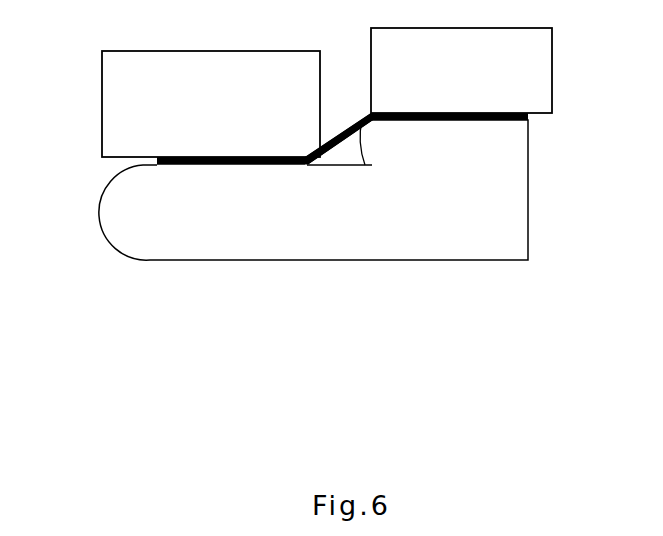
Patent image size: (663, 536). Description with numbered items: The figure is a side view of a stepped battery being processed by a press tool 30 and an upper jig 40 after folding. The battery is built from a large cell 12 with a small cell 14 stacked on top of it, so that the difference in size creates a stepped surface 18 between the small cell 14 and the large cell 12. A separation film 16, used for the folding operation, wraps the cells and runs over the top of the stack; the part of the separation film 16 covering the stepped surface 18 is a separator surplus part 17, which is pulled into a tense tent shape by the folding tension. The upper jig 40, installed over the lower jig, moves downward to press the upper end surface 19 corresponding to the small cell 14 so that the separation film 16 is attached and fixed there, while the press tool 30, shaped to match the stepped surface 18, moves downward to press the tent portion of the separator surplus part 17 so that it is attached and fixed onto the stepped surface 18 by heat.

The large cell 12 is at (522, 220).
The small cell 14 is at (522, 142).
The separation film 16 is at (530, 120).
The separator surplus part 17 is at (333, 148).
The stepped surface 18 is at (262, 165).
The upper end surface 19 is at (458, 120).
The press tool 30 is at (108, 102).
The upper jig 40 is at (540, 67).